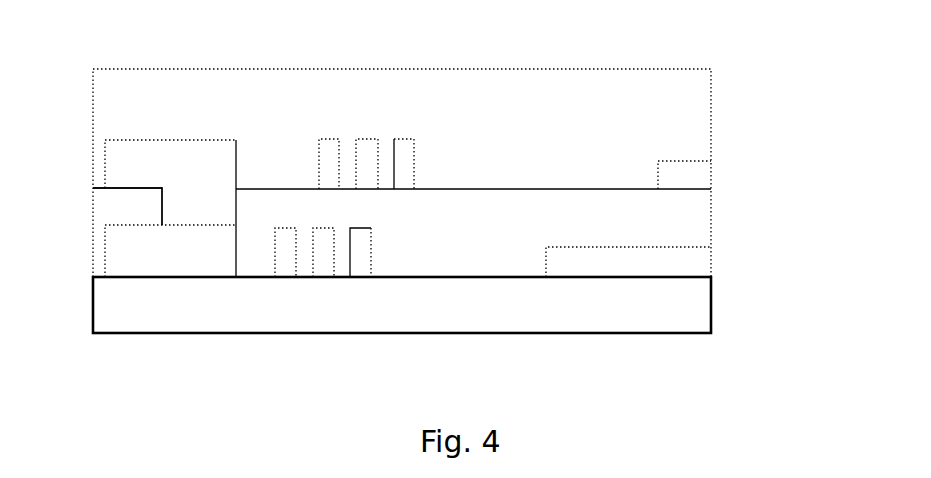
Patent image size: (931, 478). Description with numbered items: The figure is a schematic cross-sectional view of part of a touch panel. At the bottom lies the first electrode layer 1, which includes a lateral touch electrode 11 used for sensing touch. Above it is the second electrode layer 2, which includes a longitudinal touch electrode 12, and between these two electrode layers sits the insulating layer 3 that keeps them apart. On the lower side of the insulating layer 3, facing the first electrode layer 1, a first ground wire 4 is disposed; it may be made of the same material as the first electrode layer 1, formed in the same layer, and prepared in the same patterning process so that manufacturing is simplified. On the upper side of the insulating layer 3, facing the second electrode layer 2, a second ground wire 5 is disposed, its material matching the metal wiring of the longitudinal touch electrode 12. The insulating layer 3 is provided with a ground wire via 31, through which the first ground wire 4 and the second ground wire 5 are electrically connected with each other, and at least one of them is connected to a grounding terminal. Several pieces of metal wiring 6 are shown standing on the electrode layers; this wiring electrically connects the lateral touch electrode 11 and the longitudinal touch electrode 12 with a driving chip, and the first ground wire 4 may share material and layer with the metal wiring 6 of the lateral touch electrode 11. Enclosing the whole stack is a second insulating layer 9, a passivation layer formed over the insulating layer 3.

The first electrode layer 1 is at (476, 290).
The lateral touch electrode 11 is at (695, 263).
The second electrode layer 2 is at (759, 158).
The longitudinal touch electrode 12 is at (695, 177).
The insulating layer 3 is at (695, 221).
The ground wire via 31 is at (162, 212).
The first ground wire 4 is at (176, 262).
The second ground wire 5 is at (180, 177).
The metal wiring 6 is at (402, 146).
The second insulating layer 9 is at (690, 103).